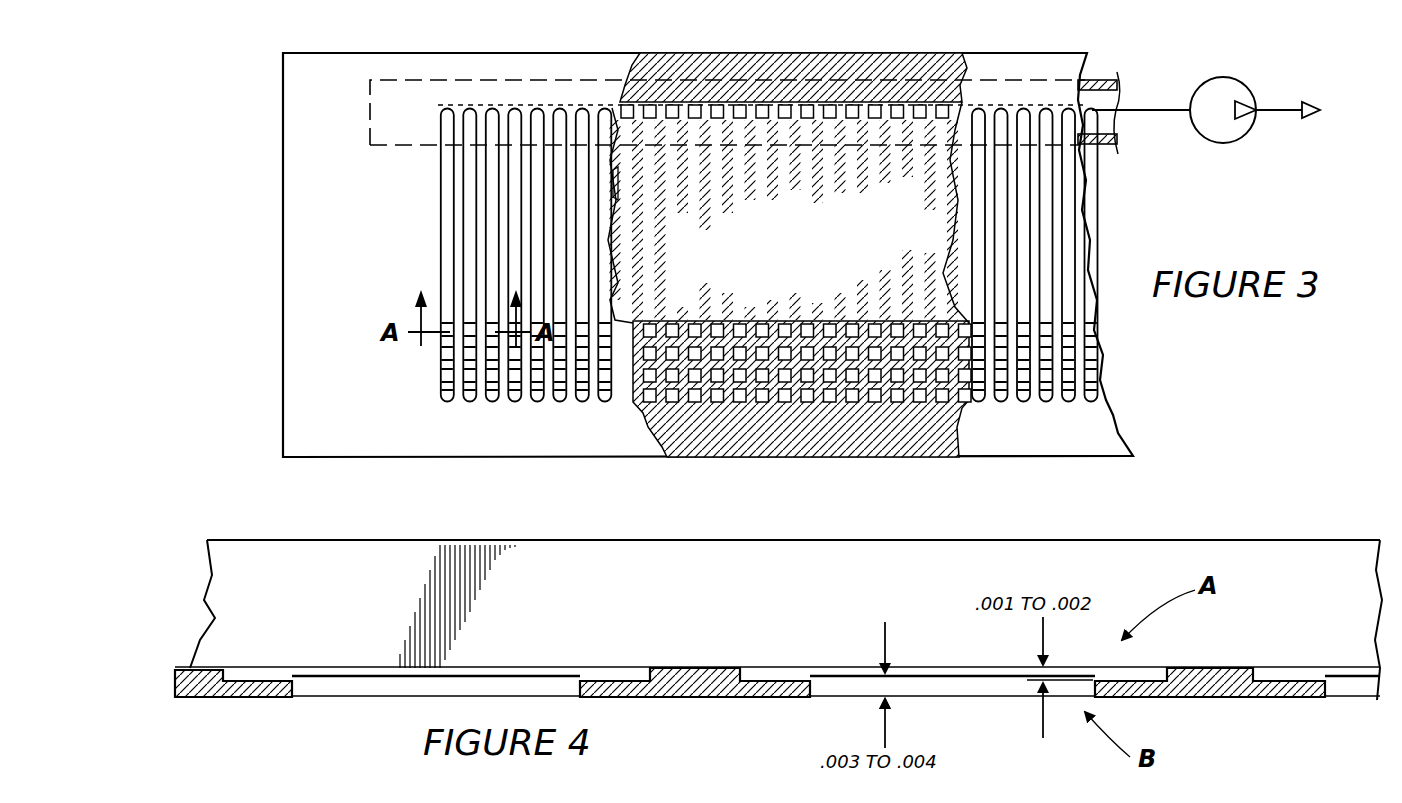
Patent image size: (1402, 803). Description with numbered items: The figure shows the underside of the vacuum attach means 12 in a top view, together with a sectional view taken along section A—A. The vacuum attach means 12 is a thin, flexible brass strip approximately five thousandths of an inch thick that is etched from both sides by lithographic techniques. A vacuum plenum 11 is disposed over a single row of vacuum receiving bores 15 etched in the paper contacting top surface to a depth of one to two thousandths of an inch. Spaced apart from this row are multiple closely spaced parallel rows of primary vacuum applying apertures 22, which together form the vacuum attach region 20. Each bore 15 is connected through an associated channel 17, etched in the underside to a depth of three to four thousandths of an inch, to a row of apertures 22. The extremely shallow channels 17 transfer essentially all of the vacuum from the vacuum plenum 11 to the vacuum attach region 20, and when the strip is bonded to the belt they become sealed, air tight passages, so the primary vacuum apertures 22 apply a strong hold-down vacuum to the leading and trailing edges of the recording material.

In FIG. 3, the vacuum plenum 11 is at (370, 112).
In FIG. 4, the vacuum plenum 11 is at (1027, 540).
In FIG. 3, the vacuum attach means 12 is at (502, 52).
In FIG. 4, the vacuum attach means 12 is at (1242, 645).
In FIG. 3, the vacuum receiving bores 15 is at (763, 112).
In FIG. 3, the channels 17 is at (450, 203).
In FIG. 4, the channels 17 is at (370, 680).
In FIG. 3, the vacuum attach region 20 is at (424, 373).
In FIG. 4, the vacuum attach region 20 is at (598, 667).
In FIG. 3, the primary vacuum applying apertures 22 is at (493, 395).
In FIG. 4, the primary vacuum applying apertures 22 is at (276, 680).